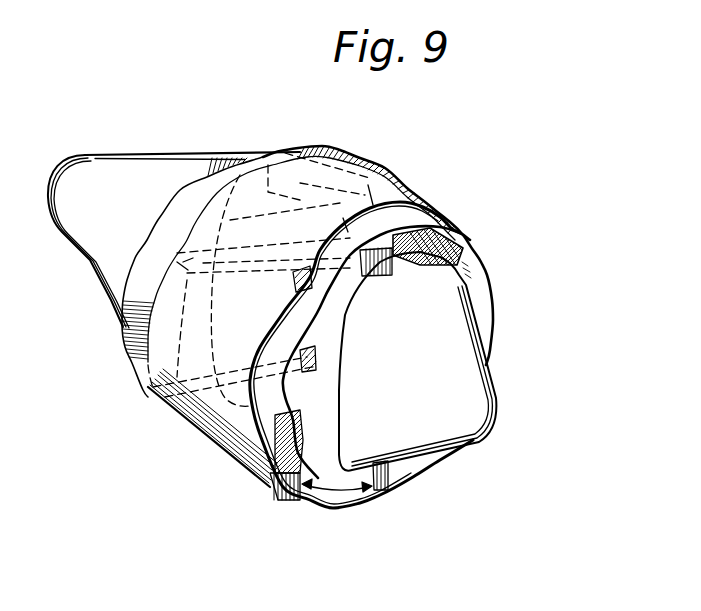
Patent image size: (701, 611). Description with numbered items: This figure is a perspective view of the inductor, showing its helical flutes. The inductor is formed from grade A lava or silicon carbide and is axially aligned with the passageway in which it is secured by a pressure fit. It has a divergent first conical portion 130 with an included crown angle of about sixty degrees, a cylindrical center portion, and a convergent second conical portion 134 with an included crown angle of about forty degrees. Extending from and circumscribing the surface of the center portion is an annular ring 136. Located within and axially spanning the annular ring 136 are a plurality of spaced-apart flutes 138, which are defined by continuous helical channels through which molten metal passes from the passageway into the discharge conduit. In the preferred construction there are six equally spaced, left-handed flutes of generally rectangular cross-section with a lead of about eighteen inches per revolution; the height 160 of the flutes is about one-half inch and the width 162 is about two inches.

The divergent first conical portion 130 is at (473, 410).
The convergent second conical portion 134 is at (153, 177).
The annular ring 136 is at (363, 165).
The flutes 138 is at (477, 283).
The height 160 is at (232, 462).
The width 162 is at (332, 497).